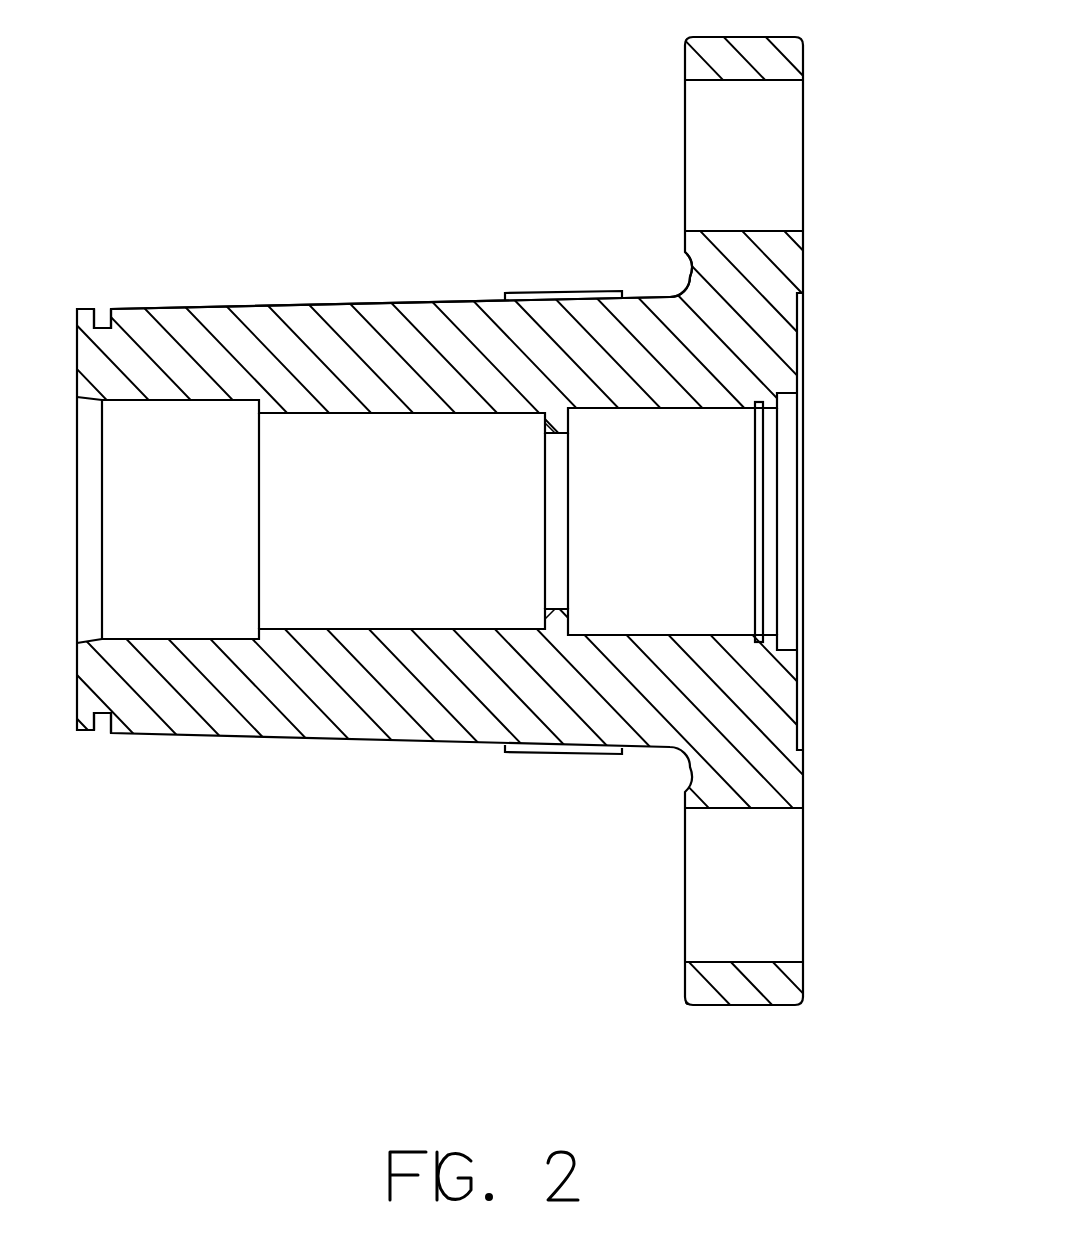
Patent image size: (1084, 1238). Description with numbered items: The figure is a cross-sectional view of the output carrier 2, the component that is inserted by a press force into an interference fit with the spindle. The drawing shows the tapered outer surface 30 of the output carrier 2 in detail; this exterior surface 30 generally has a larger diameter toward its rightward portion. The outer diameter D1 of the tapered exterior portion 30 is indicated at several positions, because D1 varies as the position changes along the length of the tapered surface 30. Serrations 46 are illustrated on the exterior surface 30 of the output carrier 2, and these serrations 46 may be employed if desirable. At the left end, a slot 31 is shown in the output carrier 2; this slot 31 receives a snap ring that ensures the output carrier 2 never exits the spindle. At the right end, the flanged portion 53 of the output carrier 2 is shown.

The output carrier 2 is at (368, 358).
The tapered outer surface 30 is at (200, 307).
The slot 31 is at (102, 325).
The serrations 46 is at (560, 292).
The flanged portion 53 is at (703, 263).
The outer diameter D1 is at (638, 780).